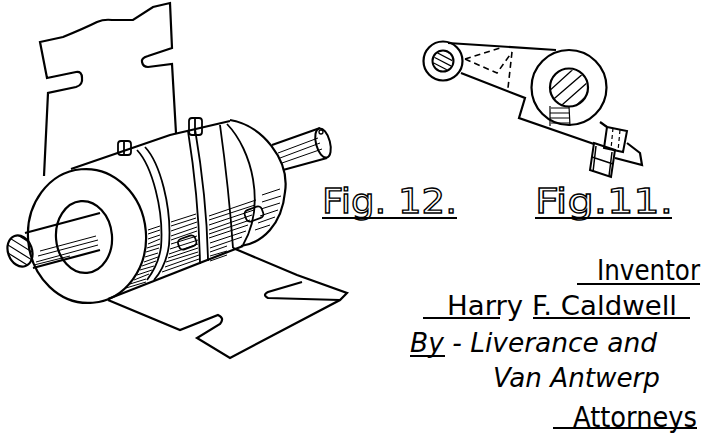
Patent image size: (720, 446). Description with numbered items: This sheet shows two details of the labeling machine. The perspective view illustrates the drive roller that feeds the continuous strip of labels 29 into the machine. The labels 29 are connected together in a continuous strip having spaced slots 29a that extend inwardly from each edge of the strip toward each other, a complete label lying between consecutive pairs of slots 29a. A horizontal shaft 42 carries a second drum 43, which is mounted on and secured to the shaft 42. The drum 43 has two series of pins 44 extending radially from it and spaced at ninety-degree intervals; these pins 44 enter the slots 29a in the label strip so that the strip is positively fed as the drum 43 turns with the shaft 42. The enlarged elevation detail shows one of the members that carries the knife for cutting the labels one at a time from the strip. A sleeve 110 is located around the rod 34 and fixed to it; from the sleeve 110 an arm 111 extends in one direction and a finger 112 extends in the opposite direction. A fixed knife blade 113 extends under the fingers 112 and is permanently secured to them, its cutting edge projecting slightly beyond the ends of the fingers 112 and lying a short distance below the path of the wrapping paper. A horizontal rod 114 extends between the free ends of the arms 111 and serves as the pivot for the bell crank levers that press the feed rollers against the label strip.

In FIG. 12, the labels 29 is at (163, 95).
In FIG. 12, the slots 29a is at (163, 58).
In FIG. 12, the horizontal shaft 42 is at (38, 272).
In FIG. 12, the second drum 43 is at (78, 287).
In FIG. 12, the pins 44 is at (189, 124).
In FIG. 11, the rod 34 is at (578, 73).
In FIG. 11, the sleeves 110 is at (600, 88).
In FIG. 11, the arms 111 is at (484, 57).
In FIG. 11, the fingers 112 is at (609, 128).
In FIG. 11, the fixed knife blade 113 is at (642, 163).
In FIG. 11, the horizontal rod 114 is at (440, 77).